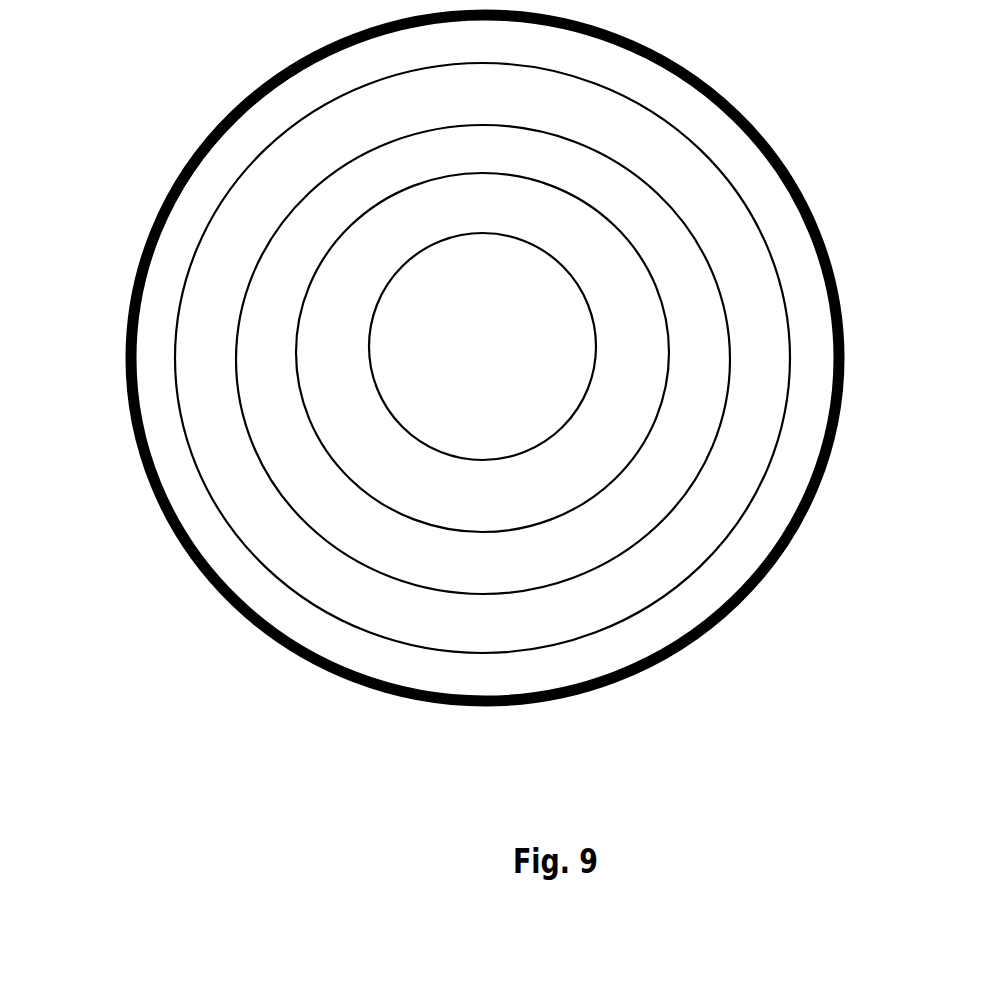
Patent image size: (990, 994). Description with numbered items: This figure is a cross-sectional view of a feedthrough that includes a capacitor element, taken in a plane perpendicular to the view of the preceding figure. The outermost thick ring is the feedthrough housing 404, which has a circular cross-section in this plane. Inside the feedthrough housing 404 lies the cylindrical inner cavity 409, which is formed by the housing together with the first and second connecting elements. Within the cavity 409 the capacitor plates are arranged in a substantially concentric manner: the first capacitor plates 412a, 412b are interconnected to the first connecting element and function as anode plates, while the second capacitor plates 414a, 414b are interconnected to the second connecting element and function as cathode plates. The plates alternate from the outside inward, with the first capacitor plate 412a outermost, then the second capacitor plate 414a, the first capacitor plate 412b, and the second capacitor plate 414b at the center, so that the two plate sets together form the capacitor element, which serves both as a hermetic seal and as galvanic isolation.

The feedthrough housing 404 is at (718, 92).
The inner cavity 409 is at (803, 364).
The first capacitor plate 412a is at (545, 648).
The second capacitor plate 414a is at (690, 487).
The first capacitor plate 412b is at (660, 403).
The second capacitor plate 414b is at (555, 258).